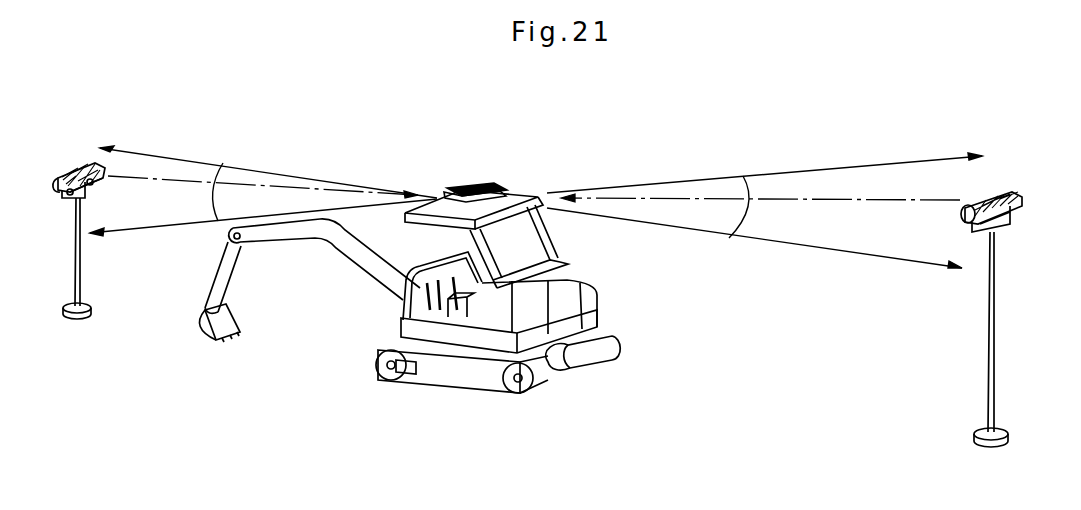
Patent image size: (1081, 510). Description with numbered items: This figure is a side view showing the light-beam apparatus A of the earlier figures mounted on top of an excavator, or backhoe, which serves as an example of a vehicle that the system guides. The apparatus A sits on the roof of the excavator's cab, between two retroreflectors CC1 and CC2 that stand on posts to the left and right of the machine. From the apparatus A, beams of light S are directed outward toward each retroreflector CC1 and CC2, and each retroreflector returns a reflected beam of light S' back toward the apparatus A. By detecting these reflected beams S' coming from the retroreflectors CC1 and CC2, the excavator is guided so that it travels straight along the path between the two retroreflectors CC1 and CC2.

The retroreflector CC1 is at (80, 165).
The retroreflector CC2 is at (1012, 192).
The apparatus A is at (480, 184).
The beam of light S is at (536, 200).
The reflected beam of light S' is at (534, 164).